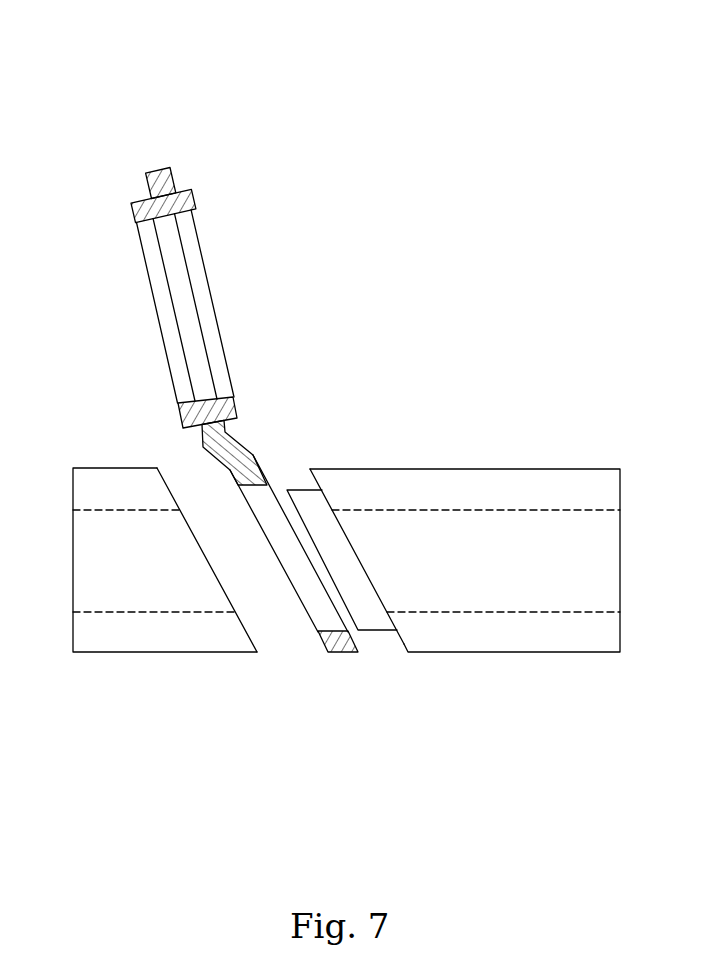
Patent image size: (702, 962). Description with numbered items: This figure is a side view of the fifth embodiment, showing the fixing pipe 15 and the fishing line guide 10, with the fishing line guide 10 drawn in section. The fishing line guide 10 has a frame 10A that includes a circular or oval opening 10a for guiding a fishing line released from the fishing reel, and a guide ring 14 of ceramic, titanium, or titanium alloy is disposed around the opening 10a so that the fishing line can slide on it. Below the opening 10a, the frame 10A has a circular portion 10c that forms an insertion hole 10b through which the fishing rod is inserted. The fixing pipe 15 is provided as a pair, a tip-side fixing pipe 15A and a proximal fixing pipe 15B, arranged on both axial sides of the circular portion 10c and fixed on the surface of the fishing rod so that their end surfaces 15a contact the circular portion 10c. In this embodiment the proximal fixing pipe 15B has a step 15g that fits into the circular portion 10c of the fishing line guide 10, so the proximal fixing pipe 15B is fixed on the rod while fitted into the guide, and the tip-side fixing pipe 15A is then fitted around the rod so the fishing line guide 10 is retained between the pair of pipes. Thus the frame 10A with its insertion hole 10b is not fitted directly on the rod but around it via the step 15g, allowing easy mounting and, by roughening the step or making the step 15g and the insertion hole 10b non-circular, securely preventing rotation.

The fishing line guide 10 is at (209, 440).
The frame 10A is at (110, 126).
The opening 10a is at (234, 349).
The insertion hole 10b is at (276, 629).
The circular portion 10c is at (335, 748).
The guide ring 14 is at (142, 308).
The fixing pipe 15 is at (339, 547).
The tip-side fixing pipe 15A is at (157, 614).
The proximal fixing pipe 15B is at (465, 494).
The end surface 15a is at (296, 570).
The step 15g is at (342, 482).